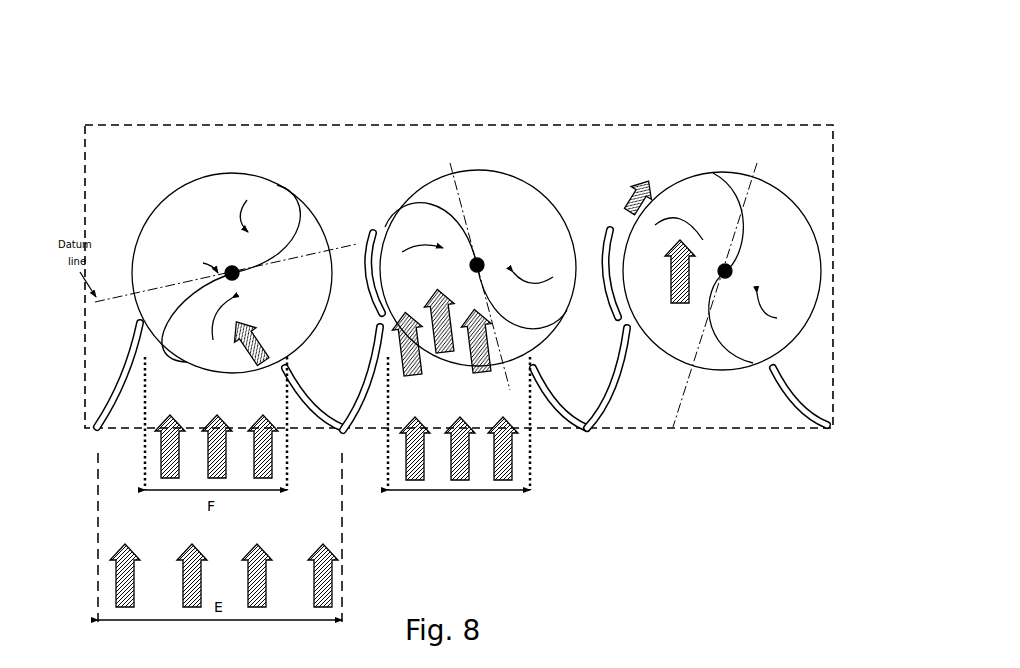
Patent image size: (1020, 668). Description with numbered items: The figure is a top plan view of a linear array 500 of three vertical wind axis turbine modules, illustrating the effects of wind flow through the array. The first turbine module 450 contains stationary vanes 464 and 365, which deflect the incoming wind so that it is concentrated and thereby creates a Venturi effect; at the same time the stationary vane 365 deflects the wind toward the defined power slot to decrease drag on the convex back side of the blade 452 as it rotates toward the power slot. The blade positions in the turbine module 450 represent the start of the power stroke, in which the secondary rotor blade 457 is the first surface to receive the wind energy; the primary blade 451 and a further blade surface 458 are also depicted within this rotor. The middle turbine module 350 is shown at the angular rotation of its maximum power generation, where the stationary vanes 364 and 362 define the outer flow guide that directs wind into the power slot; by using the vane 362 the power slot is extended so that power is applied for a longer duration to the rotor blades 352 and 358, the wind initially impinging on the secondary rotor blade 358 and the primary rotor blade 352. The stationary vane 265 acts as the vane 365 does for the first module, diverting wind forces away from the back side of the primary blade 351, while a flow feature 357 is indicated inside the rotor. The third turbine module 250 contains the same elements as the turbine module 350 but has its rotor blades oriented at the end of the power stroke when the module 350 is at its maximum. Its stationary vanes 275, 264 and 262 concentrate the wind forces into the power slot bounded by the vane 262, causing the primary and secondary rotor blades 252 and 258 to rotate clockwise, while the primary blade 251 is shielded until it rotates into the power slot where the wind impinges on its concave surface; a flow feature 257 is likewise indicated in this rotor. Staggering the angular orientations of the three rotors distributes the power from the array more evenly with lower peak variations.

The linear array 500 is at (748, 126).
The turbine module 450 is at (203, 177).
The first rotor lower blade 451 is at (163, 328).
The blade 452 is at (296, 232).
The secondary rotor blade 457 is at (252, 327).
The first rotor flow indicator 458 is at (214, 236).
The stationary vane 464 is at (118, 412).
The stationary vane 365 is at (320, 414).
The stationary vane 364 is at (359, 400).
The stationary vane 362 is at (377, 231).
The secondary rotor blade 358 is at (392, 268).
The primary rotor blade 352 is at (436, 204).
The turbine module 350 is at (482, 170).
The primary blade 351 is at (533, 330).
The second rotor flow region 357 is at (537, 283).
The stationary vane 262 is at (614, 236).
The stationary vane 265 is at (557, 415).
The stationary vane 264 is at (598, 405).
The secondary rotor blade 258 is at (680, 217).
The turbine module 250 is at (725, 173).
The primary rotor blade 252 is at (713, 183).
The third rotor flow region 257 is at (763, 312).
The primary blade 251 is at (740, 357).
The stationary vane 275 is at (798, 413).